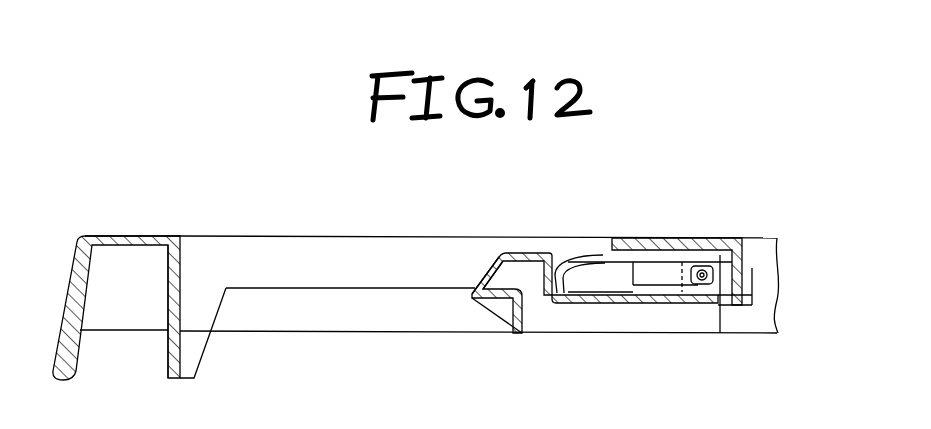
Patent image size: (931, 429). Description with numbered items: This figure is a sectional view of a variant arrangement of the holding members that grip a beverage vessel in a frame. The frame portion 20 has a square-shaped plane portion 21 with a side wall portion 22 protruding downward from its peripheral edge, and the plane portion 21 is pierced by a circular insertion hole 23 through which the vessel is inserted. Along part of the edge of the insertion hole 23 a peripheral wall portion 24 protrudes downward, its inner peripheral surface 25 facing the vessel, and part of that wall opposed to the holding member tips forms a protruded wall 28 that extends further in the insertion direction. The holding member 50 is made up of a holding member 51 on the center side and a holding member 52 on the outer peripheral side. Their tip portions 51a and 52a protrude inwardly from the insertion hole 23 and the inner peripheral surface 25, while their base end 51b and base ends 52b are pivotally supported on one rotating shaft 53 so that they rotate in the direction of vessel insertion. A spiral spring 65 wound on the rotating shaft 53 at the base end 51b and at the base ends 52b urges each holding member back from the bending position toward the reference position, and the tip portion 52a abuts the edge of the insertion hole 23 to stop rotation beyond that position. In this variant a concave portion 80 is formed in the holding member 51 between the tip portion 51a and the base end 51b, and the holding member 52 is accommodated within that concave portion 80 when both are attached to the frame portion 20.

The frame portion 20 is at (107, 233).
The plane portion 21 is at (158, 235).
The side wall portion 22 is at (115, 325).
The insertion hole 23 is at (183, 247).
The peripheral wall portion 24 is at (305, 250).
The inner peripheral surface 25 is at (352, 280).
The protruded wall 28 is at (200, 348).
The holding member 50 is at (533, 374).
The holding member on the center side 51 is at (518, 253).
The tip portion 51a is at (493, 267).
The base end 51b is at (722, 322).
The holding member on the outer peripheral side 52 is at (600, 258).
The tip portion 52a is at (565, 258).
The base ends 52b is at (697, 248).
The rotating shaft 53 is at (688, 306).
The spiral spring 65 is at (710, 305).
The concave portion 80 is at (595, 295).